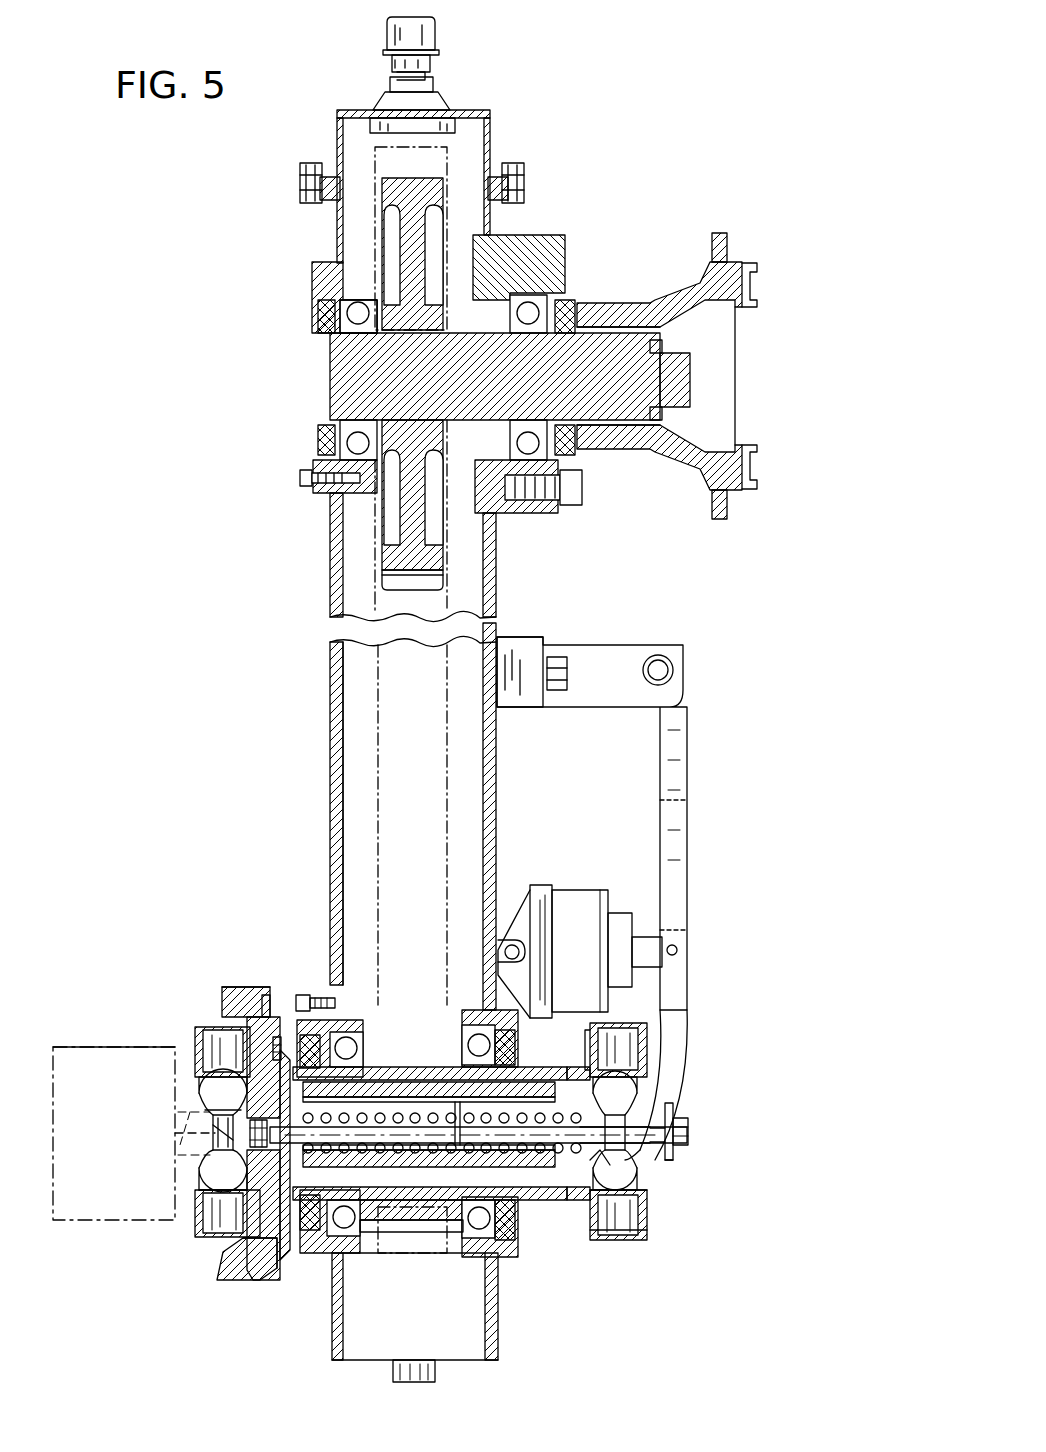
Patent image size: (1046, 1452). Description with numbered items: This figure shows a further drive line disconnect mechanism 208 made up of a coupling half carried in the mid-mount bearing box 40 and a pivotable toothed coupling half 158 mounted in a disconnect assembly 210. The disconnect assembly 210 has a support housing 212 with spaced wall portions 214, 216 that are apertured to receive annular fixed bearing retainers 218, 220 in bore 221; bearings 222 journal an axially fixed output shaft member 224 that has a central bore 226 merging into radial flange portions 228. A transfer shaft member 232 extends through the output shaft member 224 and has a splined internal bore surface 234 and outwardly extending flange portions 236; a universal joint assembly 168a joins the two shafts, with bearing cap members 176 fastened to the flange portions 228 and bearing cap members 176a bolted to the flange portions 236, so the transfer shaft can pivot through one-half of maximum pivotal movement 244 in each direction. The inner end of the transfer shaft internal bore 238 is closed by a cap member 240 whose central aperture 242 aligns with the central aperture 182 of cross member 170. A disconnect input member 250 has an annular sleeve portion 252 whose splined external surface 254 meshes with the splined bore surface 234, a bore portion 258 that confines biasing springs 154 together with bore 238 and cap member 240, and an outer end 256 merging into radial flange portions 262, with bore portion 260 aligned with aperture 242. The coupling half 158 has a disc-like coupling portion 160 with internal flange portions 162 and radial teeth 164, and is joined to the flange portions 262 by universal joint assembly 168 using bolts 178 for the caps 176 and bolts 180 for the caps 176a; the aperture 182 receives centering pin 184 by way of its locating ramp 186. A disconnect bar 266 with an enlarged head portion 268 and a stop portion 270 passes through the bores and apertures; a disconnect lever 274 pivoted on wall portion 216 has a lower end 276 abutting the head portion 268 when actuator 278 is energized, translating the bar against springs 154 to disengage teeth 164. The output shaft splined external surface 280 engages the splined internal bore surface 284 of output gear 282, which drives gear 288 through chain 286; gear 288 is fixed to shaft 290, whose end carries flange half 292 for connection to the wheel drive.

The mid-mount bearing box 40 is at (88, 1047).
The biasing springs 154 is at (610, 1148).
The pivotable toothed coupling half 158 is at (250, 961).
The disc-like coupling portion 160 is at (230, 1276).
The internal flange portions 162 is at (236, 1240).
The radial teeth 164 is at (222, 1000).
The universal joint assembly 168 is at (208, 1085).
The universal joint assembly 168a is at (640, 1120).
The cross member 170 is at (200, 1172).
The bearing cap members 176 is at (196, 1040).
The bearing cap members 176a is at (196, 1215).
The bolts 178 is at (280, 1037).
The bolts 180 is at (258, 1167).
The central aperture 182 is at (210, 1105).
The centering pin 184 is at (205, 1112).
The locating ramp 186 is at (195, 1140).
The drive line disconnect mechanism 208 is at (213, 918).
The disconnect assembly 210 is at (622, 1312).
The support housing 212 is at (288, 677).
The wall portion 214 is at (335, 722).
The wall portion 216 is at (497, 735).
The fixed bearing retainer 218 is at (318, 995).
The fixed bearing retainer 220 is at (468, 1067).
The bore 221 is at (470, 1010).
The bearings 222 is at (352, 1020).
The output shaft member 224 is at (450, 1200).
The central bore 226 is at (520, 1167).
The radial flange portions 228 is at (572, 1020).
The transfer shaft member 232 is at (523, 1200).
The splined internal bore surface 234 is at (585, 1225).
The flange portions 236 is at (615, 1232).
The internal bore 238 is at (610, 1163).
The cap member 240 is at (613, 1030).
The central aperture 242 is at (618, 1130).
The one-half of maximum pivotal movement 244 is at (343, 1243).
The disconnect input member 250 is at (305, 1289).
The annular sleeve portion 252 is at (410, 1067).
The splined external surface 254 is at (393, 1082).
The outer end 256 is at (225, 1092).
The bore portion 258 is at (442, 1097).
The bore portion 260 is at (225, 1171).
The radial flange portions 262 is at (266, 1000).
The disconnect bar 266 is at (690, 1130).
The enlarged head portion 268 is at (672, 1160).
The stop portion 270 is at (628, 1113).
The disconnect lever 274 is at (687, 745).
The lower end 276 is at (652, 1137).
The actuator 278 is at (548, 888).
The splined external surface 280 is at (493, 1265).
The output gear 282 is at (403, 1234).
The splined internal bore surface 284 is at (427, 1222).
The chain 286 is at (380, 728).
The gear 288 is at (433, 580).
The shaft 290 is at (335, 380).
The flange half 292 is at (735, 285).